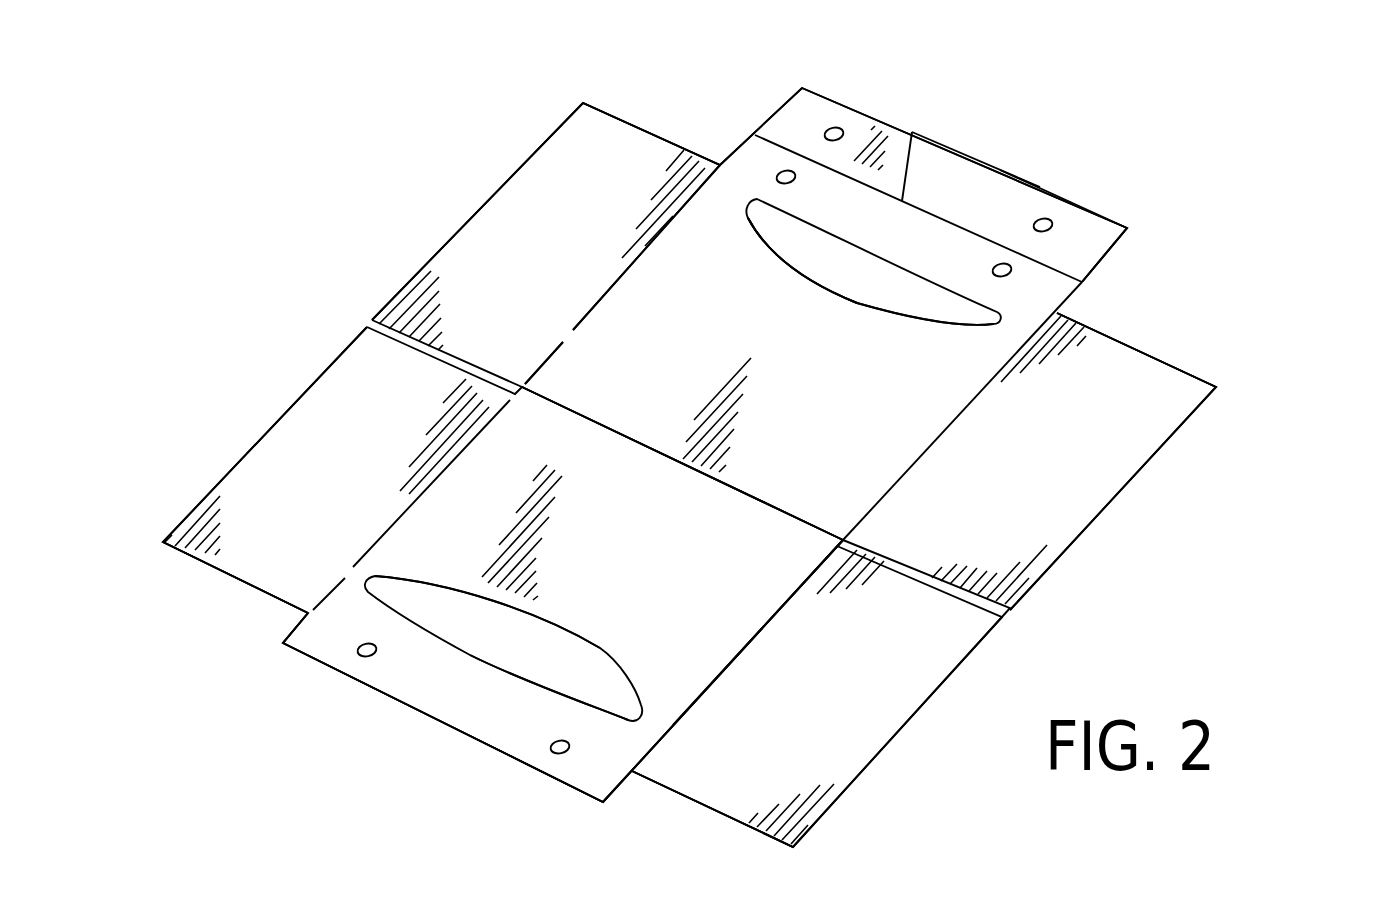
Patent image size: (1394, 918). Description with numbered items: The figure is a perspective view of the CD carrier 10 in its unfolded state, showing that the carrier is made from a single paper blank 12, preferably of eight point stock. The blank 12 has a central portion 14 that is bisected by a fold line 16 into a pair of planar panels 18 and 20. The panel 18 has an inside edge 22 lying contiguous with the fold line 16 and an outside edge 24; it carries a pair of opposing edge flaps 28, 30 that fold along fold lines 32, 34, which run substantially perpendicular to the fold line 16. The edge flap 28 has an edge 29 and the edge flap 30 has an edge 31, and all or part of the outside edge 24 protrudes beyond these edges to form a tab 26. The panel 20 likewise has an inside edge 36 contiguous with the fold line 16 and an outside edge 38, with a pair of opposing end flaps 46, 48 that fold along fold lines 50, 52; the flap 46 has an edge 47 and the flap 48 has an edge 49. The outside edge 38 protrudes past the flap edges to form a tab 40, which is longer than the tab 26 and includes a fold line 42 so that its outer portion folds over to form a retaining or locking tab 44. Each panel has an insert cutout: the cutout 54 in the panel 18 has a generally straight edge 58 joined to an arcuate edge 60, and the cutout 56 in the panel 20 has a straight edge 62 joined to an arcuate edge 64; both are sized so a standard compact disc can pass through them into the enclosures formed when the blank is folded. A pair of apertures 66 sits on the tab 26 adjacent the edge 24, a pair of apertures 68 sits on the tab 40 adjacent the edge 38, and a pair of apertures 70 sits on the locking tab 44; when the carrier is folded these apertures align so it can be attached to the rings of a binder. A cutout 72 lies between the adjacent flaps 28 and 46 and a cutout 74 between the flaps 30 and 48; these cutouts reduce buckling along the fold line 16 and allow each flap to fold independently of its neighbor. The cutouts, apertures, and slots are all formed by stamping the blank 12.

The CD carrier 10 is at (1255, 483).
The paper blank 12 is at (1072, 293).
The central portion 14 is at (678, 525).
The fold line 16 is at (767, 503).
The panel 18 is at (602, 539).
The panel 20 is at (707, 349).
The inside edge 22 is at (608, 437).
The outside edge 24 is at (400, 703).
The tab 26 is at (284, 640).
The edge flap 28 is at (265, 430).
The edge 29 is at (228, 582).
The edge flap 30 is at (877, 757).
The edge 31 is at (707, 807).
The fold line 32 is at (388, 525).
The fold line 34 is at (743, 650).
The inside edge 36 is at (580, 418).
The outside edge 38 is at (818, 90).
The tab 40 is at (912, 132).
The fold line 42 is at (942, 148).
The locking tab 44 is at (1023, 182).
The end flap 46 is at (482, 205).
The edge 47 is at (607, 115).
The end flap 48 is at (1123, 492).
The edge 49 is at (1147, 352).
The fold line 50 is at (615, 283).
The fold line 52 is at (953, 423).
The cutout 54 is at (582, 612).
The cutout 56 is at (846, 320).
The straight edge 58 is at (522, 670).
The curved edge 60 is at (600, 648).
The straight edge 62 is at (857, 242).
The curved edge 64 is at (802, 275).
The apertures 66 is at (560, 755).
The apertures 68 is at (1011, 268).
The apertures 70 is at (1051, 222).
The cutout 72 is at (443, 353).
The cutout 74 is at (922, 574).